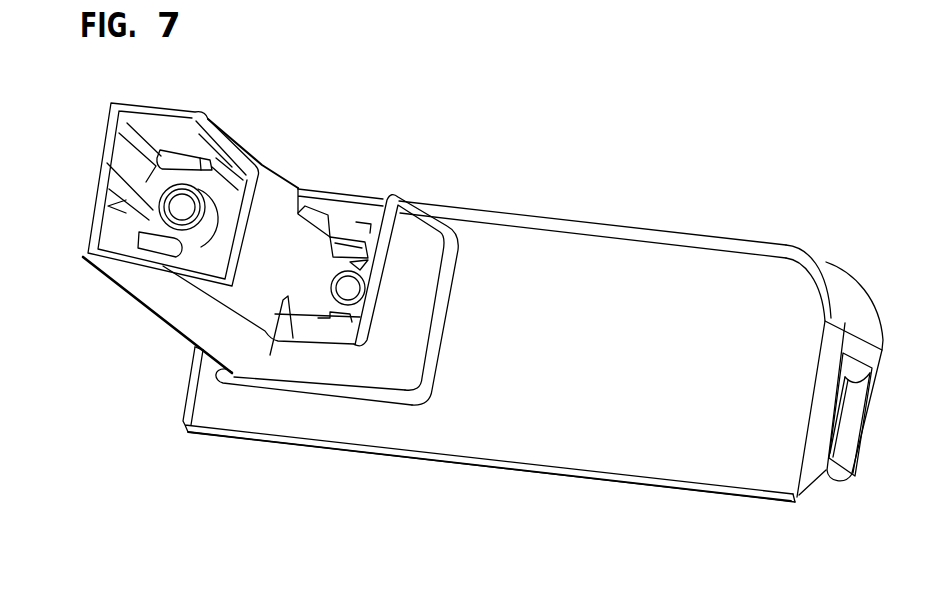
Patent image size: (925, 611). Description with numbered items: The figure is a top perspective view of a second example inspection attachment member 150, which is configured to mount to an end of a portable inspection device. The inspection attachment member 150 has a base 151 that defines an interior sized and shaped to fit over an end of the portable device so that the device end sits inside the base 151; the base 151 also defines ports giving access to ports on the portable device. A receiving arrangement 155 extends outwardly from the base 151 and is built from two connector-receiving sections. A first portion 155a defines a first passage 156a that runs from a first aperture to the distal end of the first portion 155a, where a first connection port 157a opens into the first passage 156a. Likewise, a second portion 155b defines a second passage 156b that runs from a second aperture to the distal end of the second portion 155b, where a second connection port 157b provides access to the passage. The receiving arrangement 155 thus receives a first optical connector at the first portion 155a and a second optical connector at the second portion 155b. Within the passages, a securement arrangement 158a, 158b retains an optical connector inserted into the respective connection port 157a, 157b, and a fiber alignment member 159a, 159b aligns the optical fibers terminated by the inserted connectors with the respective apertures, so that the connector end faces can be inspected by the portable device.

The inspection attachment member 150 is at (662, 200).
The base 151 is at (640, 443).
The receiving arrangement 155 is at (320, 378).
The first portion 155a is at (407, 348).
The second portion 155b is at (142, 280).
The first passage 156a is at (332, 215).
The second passage 156b is at (133, 158).
The first connection port 157a is at (287, 299).
The second connection port 157b is at (127, 203).
The securement arrangement 158a is at (352, 245).
The securement arrangement 158b is at (177, 163).
The fiber alignment member 159a is at (356, 264).
The fiber alignment member 159b is at (217, 217).